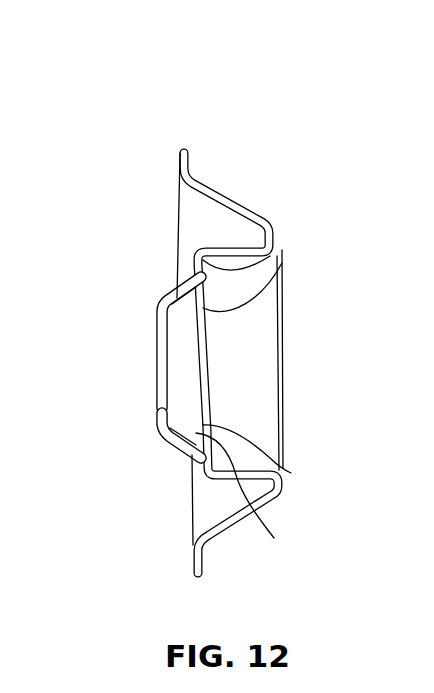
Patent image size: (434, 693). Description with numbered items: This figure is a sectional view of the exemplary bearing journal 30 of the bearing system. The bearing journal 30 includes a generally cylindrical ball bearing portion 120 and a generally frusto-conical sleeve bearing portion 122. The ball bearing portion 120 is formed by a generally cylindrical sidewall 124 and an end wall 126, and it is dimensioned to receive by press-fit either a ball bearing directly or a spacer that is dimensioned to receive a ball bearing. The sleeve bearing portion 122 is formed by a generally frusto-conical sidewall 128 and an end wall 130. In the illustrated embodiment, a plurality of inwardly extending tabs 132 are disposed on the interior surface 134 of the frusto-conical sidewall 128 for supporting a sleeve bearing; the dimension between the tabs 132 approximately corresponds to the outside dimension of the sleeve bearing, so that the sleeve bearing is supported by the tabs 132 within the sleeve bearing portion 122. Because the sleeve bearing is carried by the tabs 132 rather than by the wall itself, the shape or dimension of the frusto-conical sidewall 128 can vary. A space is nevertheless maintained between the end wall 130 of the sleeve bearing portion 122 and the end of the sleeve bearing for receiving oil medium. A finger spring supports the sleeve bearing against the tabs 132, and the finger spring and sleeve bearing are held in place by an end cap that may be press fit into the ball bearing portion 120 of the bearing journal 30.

The bearing journal 30 is at (207, 344).
The ball bearing portion 120 is at (193, 513).
The sleeve bearing portion 122 is at (193, 423).
The cylindrical sidewall 124 is at (241, 260).
The end wall 126 is at (243, 258).
The frusto-conical sidewall 128 is at (171, 283).
The end wall 130 is at (156, 313).
The inwardly extending tabs 132 is at (279, 270).
The interior surface 134 is at (263, 503).